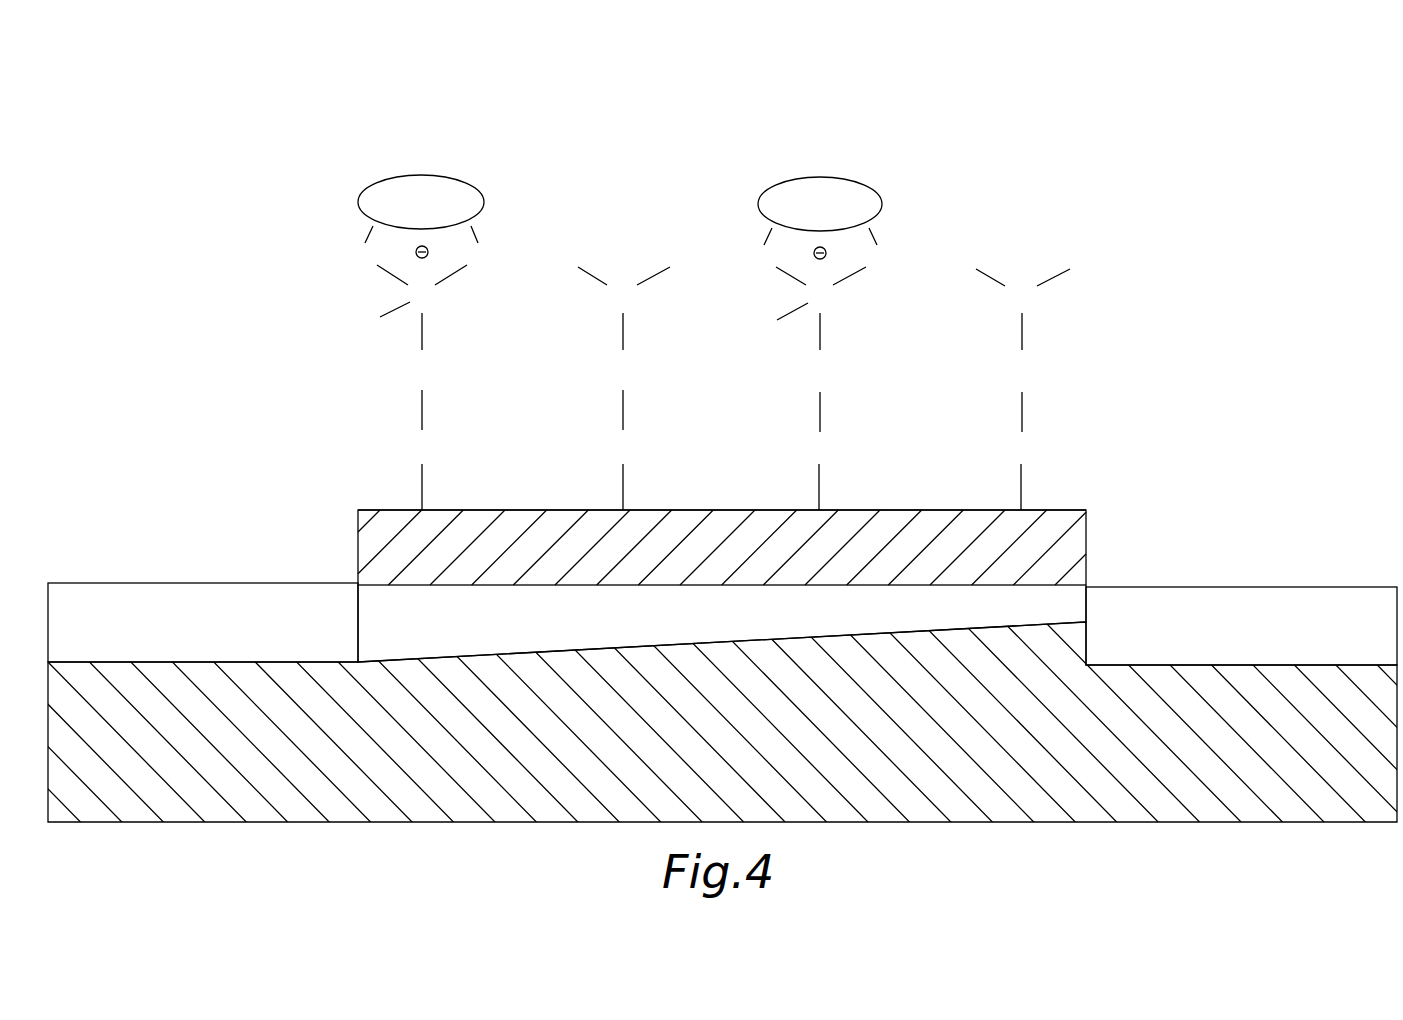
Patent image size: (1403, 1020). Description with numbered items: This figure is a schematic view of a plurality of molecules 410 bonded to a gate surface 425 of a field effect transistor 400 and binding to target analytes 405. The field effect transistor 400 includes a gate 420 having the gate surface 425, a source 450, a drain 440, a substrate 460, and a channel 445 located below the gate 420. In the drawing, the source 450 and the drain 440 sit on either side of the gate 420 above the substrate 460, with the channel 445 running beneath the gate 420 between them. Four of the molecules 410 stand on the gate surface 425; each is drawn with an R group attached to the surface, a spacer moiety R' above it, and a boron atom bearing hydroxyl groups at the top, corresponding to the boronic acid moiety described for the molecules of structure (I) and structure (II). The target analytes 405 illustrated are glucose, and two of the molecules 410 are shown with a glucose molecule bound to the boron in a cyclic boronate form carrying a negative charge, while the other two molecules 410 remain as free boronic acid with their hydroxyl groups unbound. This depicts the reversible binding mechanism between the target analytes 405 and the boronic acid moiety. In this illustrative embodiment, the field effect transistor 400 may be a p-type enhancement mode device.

The field effect transistor 400 is at (530, 100).
The target analytes 405 is at (420, 173).
The molecules 410 is at (618, 232).
The gate 420 is at (1075, 543).
The gate surface 425 is at (1063, 510).
The drain 440 is at (1278, 600).
The channel 445 is at (385, 605).
The source 450 is at (172, 598).
The substrate 460 is at (987, 802).